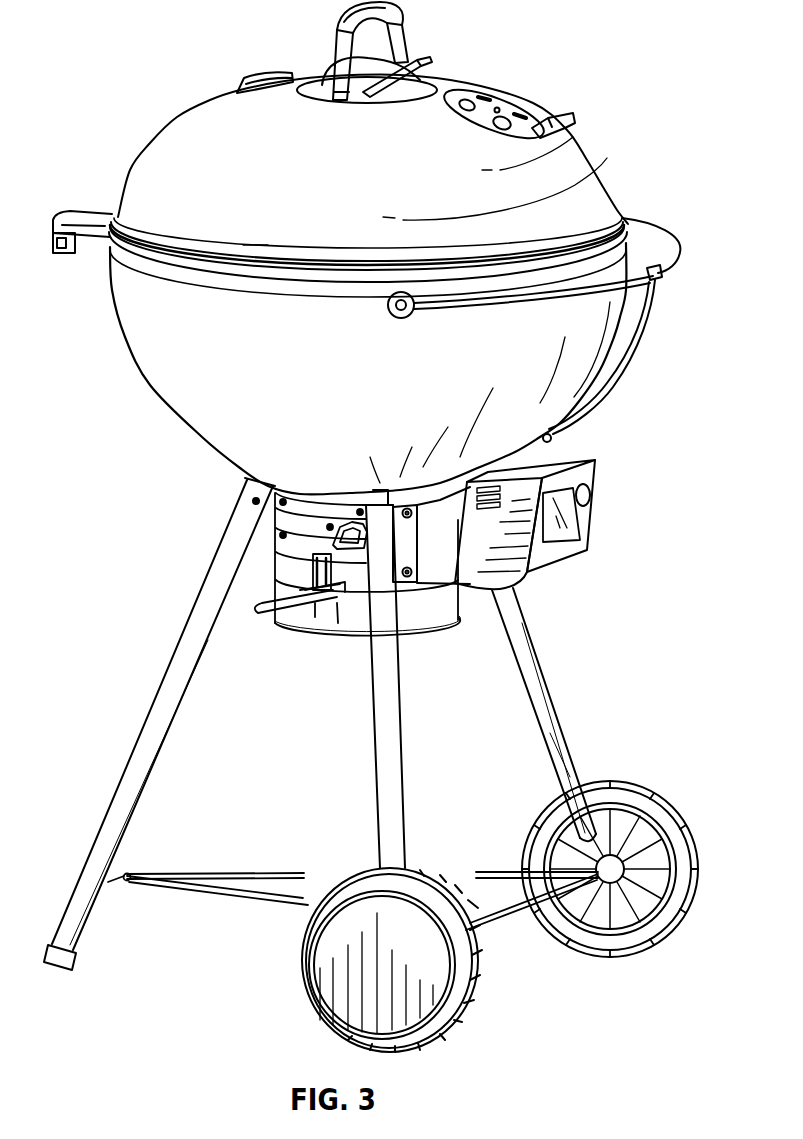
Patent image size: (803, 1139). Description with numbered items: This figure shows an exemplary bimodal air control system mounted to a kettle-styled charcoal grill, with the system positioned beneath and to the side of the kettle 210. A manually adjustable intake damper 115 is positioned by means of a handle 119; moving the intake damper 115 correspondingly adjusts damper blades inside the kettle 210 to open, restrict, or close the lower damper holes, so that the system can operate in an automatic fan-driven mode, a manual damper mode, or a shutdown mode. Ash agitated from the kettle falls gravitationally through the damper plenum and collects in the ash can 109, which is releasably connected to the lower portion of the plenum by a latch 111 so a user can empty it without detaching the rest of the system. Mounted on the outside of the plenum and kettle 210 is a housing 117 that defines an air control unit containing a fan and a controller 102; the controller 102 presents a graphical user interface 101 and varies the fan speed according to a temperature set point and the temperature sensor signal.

The graphical user interface 101 is at (583, 518).
The controller 102 is at (580, 530).
The ash can 109 is at (355, 617).
The latch 111 is at (282, 538).
The intake damper 115 is at (255, 500).
The housing 117 is at (483, 568).
The handle 119 is at (347, 523).
The kettle 210 is at (173, 363).